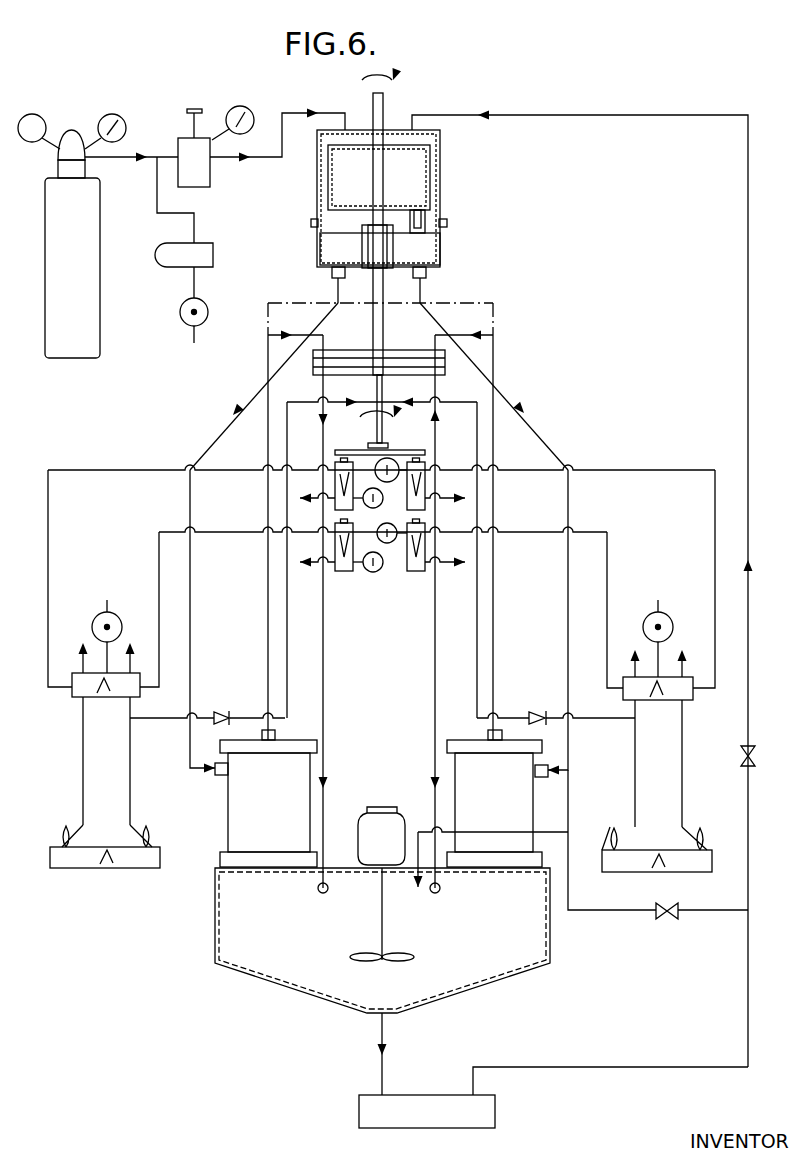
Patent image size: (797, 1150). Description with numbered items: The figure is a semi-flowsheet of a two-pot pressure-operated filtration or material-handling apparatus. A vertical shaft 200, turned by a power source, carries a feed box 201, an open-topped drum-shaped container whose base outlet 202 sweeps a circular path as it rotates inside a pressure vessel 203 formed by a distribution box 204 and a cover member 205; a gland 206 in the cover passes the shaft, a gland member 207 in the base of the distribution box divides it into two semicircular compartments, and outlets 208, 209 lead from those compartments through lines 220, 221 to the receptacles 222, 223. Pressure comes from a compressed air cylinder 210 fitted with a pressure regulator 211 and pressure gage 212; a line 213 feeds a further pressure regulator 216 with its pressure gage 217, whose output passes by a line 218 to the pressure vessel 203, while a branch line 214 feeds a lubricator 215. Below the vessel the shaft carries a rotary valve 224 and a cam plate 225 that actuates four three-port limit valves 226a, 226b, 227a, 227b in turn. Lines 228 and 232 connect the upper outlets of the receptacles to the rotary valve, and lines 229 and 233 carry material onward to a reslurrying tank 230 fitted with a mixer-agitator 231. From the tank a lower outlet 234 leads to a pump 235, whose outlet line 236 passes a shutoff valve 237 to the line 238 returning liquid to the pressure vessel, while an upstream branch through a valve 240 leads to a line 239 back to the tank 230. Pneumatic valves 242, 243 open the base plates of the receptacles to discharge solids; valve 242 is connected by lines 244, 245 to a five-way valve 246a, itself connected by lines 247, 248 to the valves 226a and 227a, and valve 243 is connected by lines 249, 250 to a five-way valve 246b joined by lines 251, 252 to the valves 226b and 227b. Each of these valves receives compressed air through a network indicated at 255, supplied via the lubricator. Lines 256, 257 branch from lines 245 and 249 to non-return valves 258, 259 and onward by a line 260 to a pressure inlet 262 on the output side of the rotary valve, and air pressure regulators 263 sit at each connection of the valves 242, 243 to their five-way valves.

The vertical shaft 200 is at (385, 156).
The feed box 201 is at (378, 175).
The outlet 202 is at (426, 220).
The pressure vessel 203 is at (308, 216).
The distribution box 204 is at (441, 257).
The cover member 205 is at (442, 191).
The gland 206 is at (385, 128).
The gland member 207 is at (356, 278).
The outlet 208 is at (330, 273).
The outlet 209 is at (428, 277).
The compressed air cylinder 210 is at (93, 268).
The pressure regulator 211 is at (38, 114).
The pressure gage 212 is at (107, 114).
The line 213 is at (112, 157).
The branch line 214 is at (162, 216).
The lubricator 215 is at (172, 266).
The pressure regulator 216 is at (182, 140).
The pressure gage 217 is at (242, 100).
The line 218 is at (290, 125).
The line 220 is at (258, 404).
The line 221 is at (545, 425).
The receptacle 222 is at (290, 811).
The receptacle 223 is at (515, 811).
The rotary valve 224 is at (440, 368).
The cam plate 225 is at (345, 450).
The three-port limit valve 226a is at (335, 505).
The three-port limit valve 226b is at (425, 505).
The three-port limit valve 227a is at (335, 545).
The three-port limit valve 227b is at (425, 550).
The line 228 is at (268, 606).
The line 229 is at (327, 698).
The reslurrying container 230 is at (330, 937).
The mixer-agitator 231 is at (382, 820).
The line 232 is at (497, 636).
The line 233 is at (435, 725).
The lower outlet 234 is at (384, 1035).
The pump 235 is at (496, 1111).
The pump outlet line 236 is at (640, 1072).
The shutoff valve 237 is at (740, 757).
The line 238 is at (652, 113).
The line 239 is at (570, 893).
The valve 240 is at (667, 918).
The pneumatic valve 242 is at (148, 868).
The pneumatic valve 243 is at (685, 872).
The line 244 is at (83, 762).
The line 245 is at (130, 791).
The five-way valve 246a is at (78, 697).
The five-way valve 246b is at (672, 700).
The line 247 is at (50, 507).
The line 248 is at (158, 555).
The line 249 is at (635, 795).
The line 250 is at (682, 787).
The line 251 is at (612, 560).
The line 252 is at (713, 494).
The compressed air network 255 is at (182, 326).
The line 256 is at (142, 720).
The line 257 is at (608, 722).
The non-return valve 258 is at (236, 692).
The non-return valve 259 is at (548, 690).
The line 260 is at (287, 623).
The pressure inlet 262 is at (383, 386).
The air pressure regulator 263 is at (130, 833).